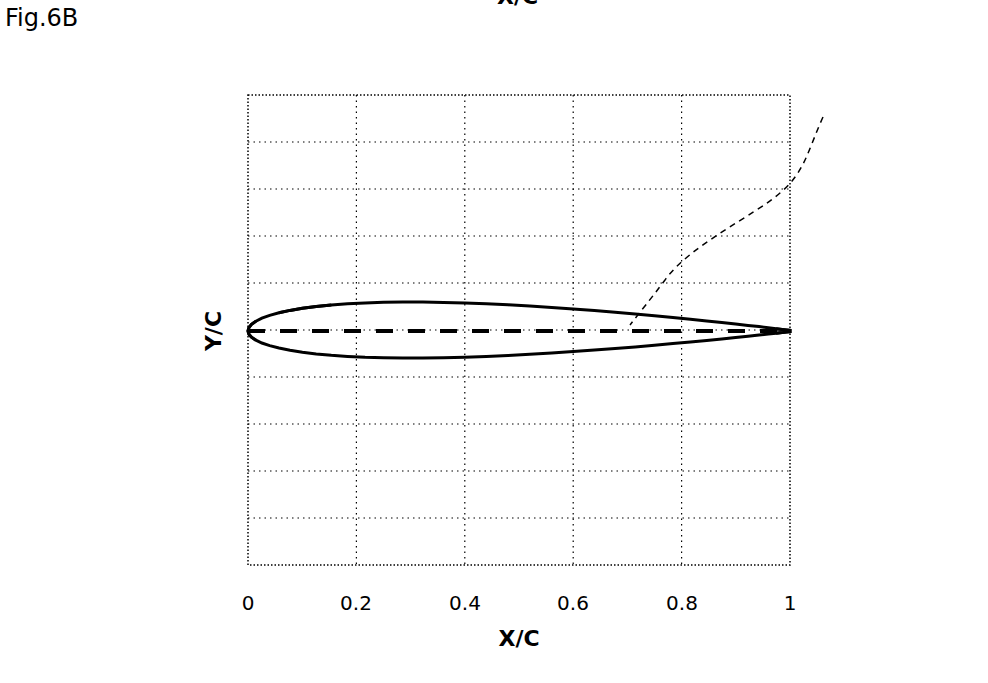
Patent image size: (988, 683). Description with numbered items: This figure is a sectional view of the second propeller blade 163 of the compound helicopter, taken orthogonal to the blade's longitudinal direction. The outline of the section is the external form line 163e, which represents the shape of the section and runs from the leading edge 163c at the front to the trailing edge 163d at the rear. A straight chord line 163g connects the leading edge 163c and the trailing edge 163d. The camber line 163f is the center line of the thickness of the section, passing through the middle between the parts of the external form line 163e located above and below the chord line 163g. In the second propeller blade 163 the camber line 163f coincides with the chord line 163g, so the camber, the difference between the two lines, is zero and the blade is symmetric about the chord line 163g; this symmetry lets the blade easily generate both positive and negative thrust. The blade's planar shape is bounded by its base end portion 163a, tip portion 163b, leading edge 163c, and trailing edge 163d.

The second propeller blade 163 is at (508, 258).
The base end portion 163a is at (586, 421).
The tip portion 163b is at (505, 332).
The leading edge 163c is at (248, 331).
The trailing edge 163d is at (792, 328).
The external form line 163e is at (302, 307).
The camber line 163f is at (757, 187).
The chord line 163g is at (757, 204).